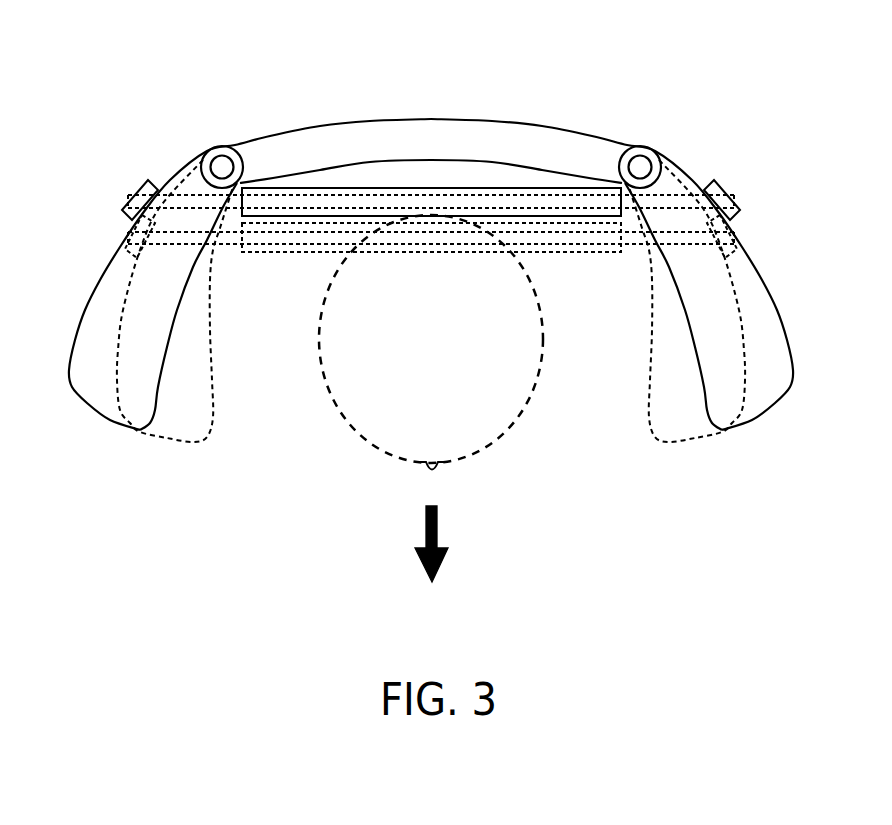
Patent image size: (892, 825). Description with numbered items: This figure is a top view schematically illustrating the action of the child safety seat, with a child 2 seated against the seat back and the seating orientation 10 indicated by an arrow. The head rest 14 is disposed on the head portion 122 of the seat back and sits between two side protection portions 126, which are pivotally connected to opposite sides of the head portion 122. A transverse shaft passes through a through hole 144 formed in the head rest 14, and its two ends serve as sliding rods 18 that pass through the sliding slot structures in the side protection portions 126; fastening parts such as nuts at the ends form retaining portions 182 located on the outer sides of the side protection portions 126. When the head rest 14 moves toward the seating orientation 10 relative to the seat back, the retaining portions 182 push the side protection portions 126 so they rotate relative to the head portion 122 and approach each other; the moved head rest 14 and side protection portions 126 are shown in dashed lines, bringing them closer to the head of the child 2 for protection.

The child 2 is at (528, 410).
The seating orientation 10 is at (438, 532).
The head rest 14 is at (529, 188).
The sliding rod 18 is at (187, 191).
The head portion 122 is at (388, 132).
The side protection portion 126 is at (88, 343).
The through hole 144 is at (471, 188).
The retaining portion 182 is at (143, 186).